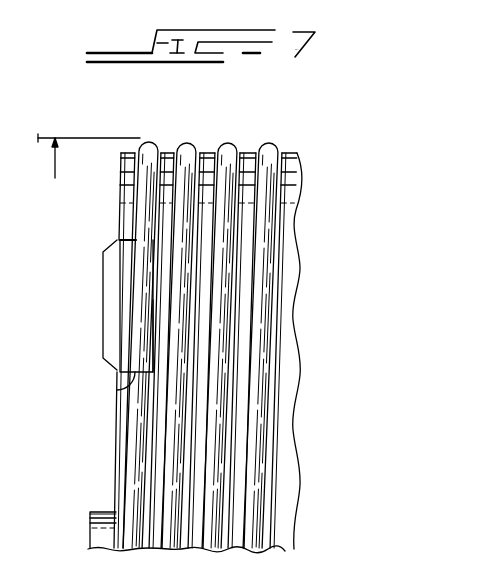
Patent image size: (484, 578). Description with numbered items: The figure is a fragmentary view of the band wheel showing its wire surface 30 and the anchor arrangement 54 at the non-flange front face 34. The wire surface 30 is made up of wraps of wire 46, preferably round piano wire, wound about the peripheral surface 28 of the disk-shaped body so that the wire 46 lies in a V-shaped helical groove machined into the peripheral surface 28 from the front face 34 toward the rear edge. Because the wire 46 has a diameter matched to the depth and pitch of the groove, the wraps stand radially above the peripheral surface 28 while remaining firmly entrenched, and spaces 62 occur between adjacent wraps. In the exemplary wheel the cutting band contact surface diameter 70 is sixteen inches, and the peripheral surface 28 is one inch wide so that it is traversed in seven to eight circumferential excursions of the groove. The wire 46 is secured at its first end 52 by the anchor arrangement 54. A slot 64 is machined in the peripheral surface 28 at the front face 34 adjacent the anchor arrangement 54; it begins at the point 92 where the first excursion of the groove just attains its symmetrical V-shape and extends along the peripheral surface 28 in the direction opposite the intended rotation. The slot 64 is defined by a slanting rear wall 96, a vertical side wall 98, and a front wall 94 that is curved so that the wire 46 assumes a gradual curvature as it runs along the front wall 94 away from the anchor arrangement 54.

The peripheral surface 28 is at (290, 152).
The wire surface 30 is at (263, 141).
The non-flange front face 34 is at (120, 206).
The wire 46 is at (147, 141).
The first end 52 is at (114, 473).
The anchor arrangement 54 is at (90, 530).
The spaces 62 is at (243, 136).
The slot 64 is at (103, 299).
The cutting band contact surface diameter 70 is at (84, 158).
The point 92 is at (120, 372).
The front wall 94 is at (120, 260).
The slanting rear wall 96 is at (130, 390).
The vertical side wall 98 is at (155, 318).